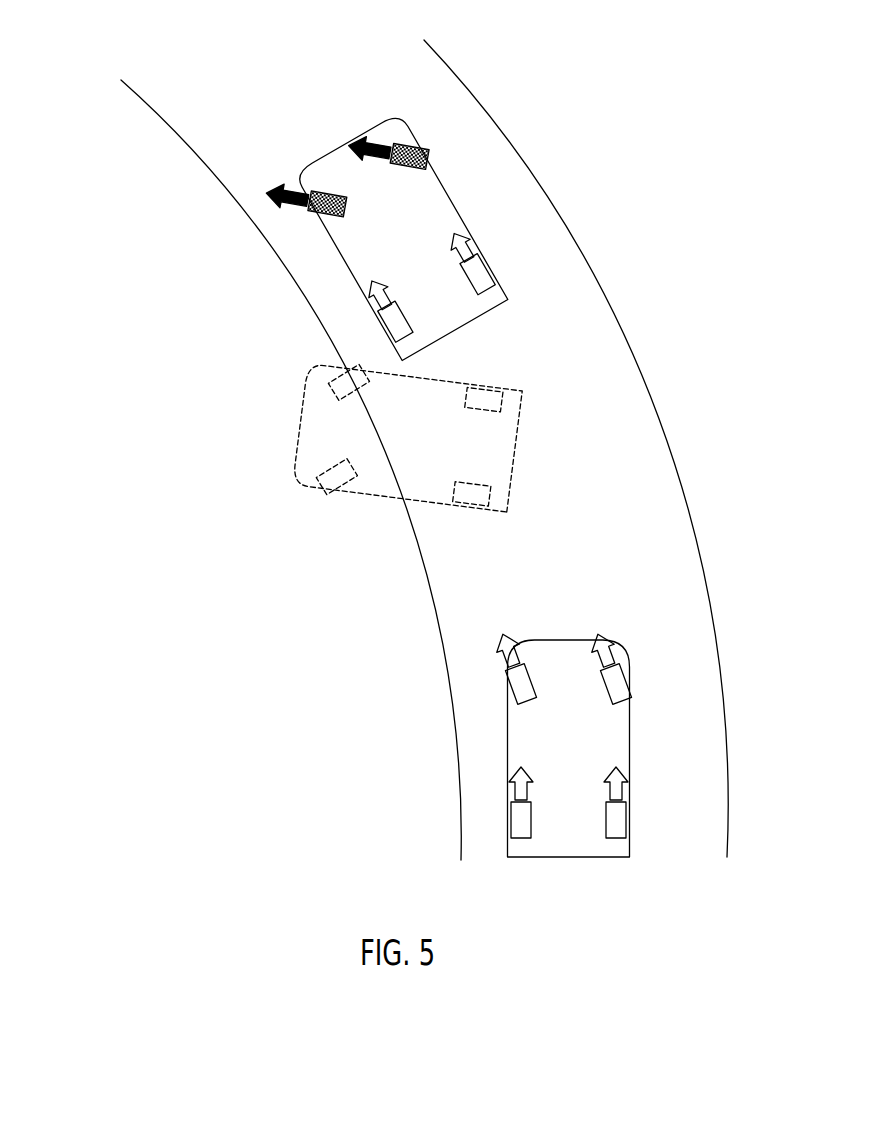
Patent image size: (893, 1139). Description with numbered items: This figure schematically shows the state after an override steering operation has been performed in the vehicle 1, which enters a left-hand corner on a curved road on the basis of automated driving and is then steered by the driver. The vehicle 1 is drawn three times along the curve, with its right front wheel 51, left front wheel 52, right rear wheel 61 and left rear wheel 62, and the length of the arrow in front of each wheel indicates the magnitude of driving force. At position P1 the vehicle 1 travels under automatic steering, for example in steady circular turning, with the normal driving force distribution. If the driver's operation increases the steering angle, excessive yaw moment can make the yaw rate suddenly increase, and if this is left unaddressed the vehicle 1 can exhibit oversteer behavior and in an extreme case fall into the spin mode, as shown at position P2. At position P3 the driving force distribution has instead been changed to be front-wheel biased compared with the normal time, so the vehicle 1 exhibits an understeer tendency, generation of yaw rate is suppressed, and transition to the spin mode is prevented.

The vehicle 1 is at (372, 430).
The right front wheel 51 is at (404, 150).
The left front wheel 52 is at (307, 188).
The right rear wheel 61 is at (487, 273).
The left rear wheel 62 is at (385, 323).
The position P1 is at (488, 772).
The position P2 is at (285, 483).
The position P3 is at (479, 199).